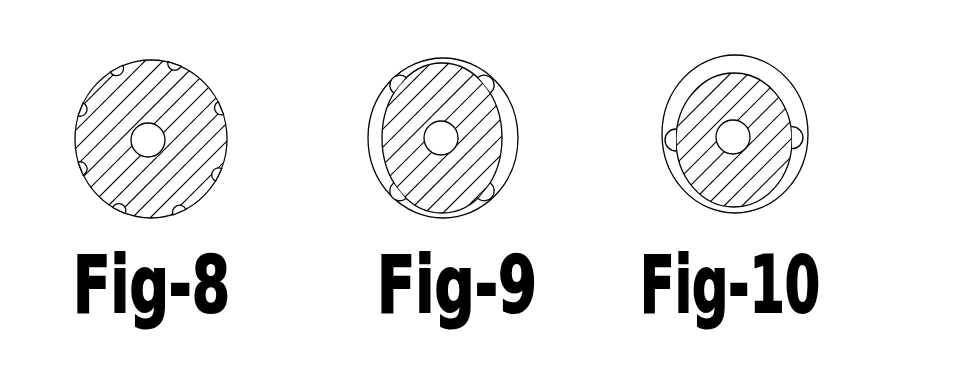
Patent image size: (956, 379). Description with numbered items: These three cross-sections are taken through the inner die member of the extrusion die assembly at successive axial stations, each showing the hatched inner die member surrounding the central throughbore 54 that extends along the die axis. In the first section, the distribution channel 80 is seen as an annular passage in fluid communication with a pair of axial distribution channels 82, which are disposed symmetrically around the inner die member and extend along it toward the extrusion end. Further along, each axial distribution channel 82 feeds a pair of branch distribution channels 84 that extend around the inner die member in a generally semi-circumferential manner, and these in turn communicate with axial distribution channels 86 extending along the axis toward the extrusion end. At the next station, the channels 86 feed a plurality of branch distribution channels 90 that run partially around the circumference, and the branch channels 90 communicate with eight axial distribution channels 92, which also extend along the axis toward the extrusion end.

In FIG. 8, the throughbore 54 is at (140, 138).
In FIG. 9, the throughbore 54 is at (457, 138).
In FIG. 10, the throughbore 54 is at (721, 127).
In FIG. 10, the distribution channel 80 is at (762, 68).
In FIG. 10, the axial distribution channels 82 is at (667, 137).
In FIG. 9, the branch distribution channels 84 is at (378, 110).
In FIG. 9, the axial distribution channels 86 is at (395, 83).
In FIG. 8, the branch distribution channels 90 is at (100, 87).
In FIG. 8, the axial distribution channels 92 is at (118, 66).